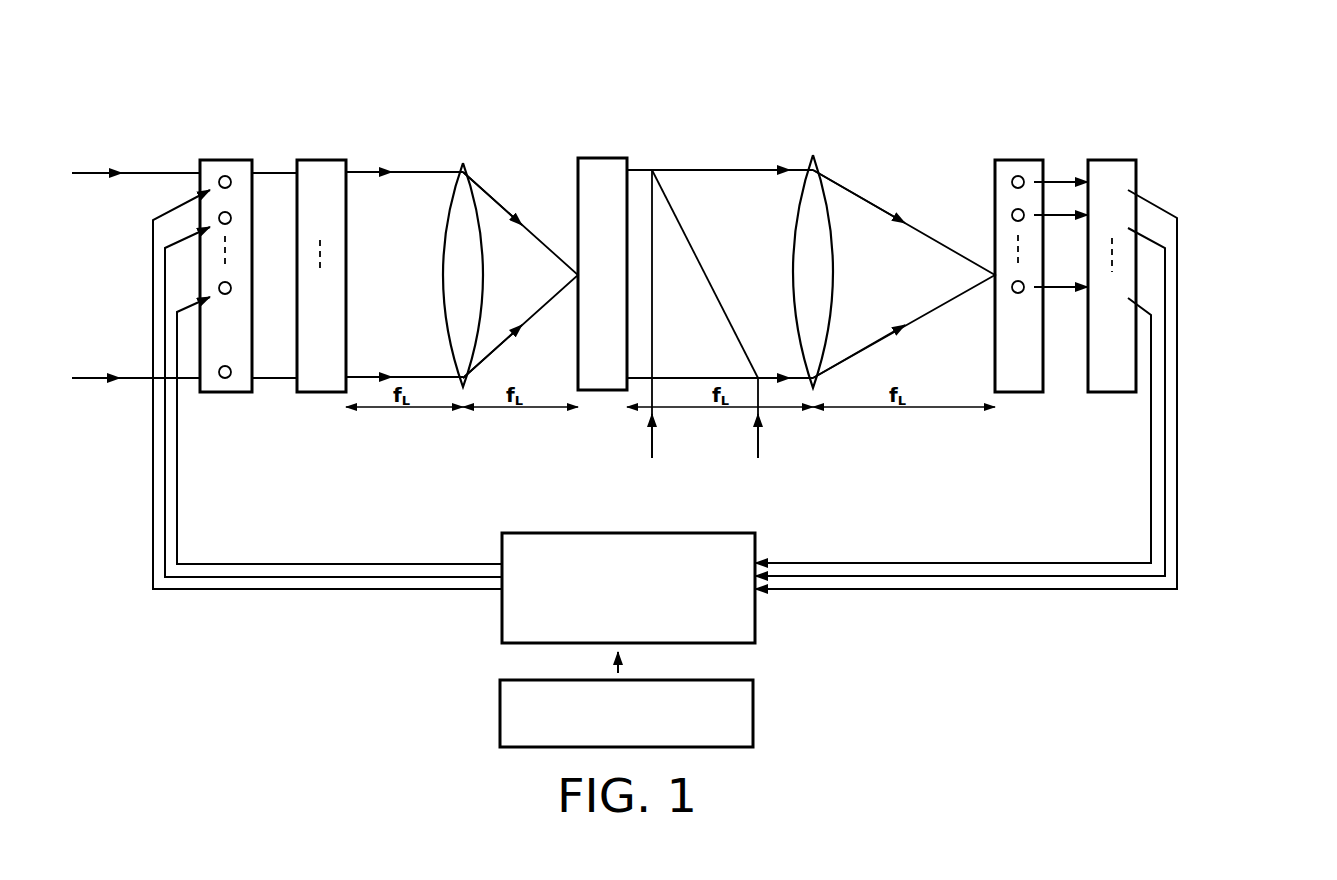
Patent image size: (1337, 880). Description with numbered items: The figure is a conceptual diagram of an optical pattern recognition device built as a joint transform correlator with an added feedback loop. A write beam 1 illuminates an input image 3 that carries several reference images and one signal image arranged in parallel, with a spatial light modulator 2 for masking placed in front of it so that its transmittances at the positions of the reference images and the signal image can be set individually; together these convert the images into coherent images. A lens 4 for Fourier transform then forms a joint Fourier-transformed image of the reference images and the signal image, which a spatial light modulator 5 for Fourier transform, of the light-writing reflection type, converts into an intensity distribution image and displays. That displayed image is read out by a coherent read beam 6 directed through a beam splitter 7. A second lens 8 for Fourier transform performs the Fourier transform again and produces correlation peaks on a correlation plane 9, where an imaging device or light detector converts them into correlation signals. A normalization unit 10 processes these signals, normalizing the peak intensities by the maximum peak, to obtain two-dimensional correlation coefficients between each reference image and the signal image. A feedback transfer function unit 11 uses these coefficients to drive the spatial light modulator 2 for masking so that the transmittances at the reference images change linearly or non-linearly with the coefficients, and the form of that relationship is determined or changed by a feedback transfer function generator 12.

The write beam 1 is at (80, 181).
The spatial light modulator for masking 2 is at (213, 160).
The input image 3 is at (317, 160).
The lens for Fourier transform 4 is at (466, 167).
The spatial light modulator for Fourier transform 5 is at (603, 158).
The read beam 6 is at (653, 450).
The beam splitter 7 is at (677, 214).
The lens for Fourier transform 8 is at (820, 162).
The correlation plane 9 is at (1018, 160).
The normalization unit 10 is at (1100, 160).
The feedback transfer function unit 11 is at (518, 533).
The feedback transfer function generator 12 is at (757, 712).